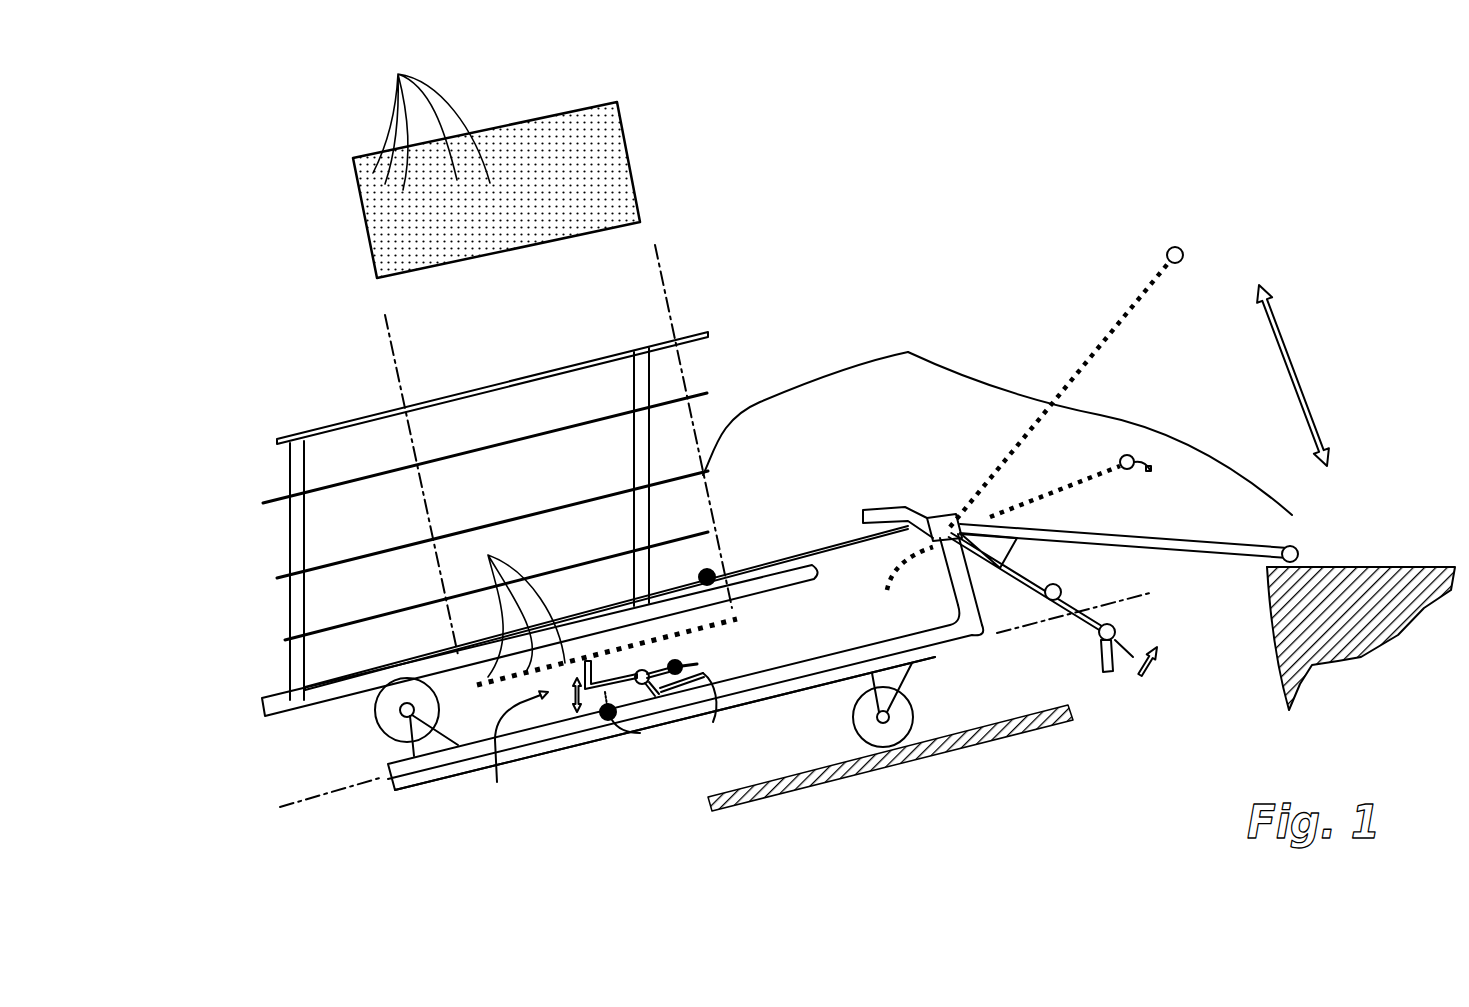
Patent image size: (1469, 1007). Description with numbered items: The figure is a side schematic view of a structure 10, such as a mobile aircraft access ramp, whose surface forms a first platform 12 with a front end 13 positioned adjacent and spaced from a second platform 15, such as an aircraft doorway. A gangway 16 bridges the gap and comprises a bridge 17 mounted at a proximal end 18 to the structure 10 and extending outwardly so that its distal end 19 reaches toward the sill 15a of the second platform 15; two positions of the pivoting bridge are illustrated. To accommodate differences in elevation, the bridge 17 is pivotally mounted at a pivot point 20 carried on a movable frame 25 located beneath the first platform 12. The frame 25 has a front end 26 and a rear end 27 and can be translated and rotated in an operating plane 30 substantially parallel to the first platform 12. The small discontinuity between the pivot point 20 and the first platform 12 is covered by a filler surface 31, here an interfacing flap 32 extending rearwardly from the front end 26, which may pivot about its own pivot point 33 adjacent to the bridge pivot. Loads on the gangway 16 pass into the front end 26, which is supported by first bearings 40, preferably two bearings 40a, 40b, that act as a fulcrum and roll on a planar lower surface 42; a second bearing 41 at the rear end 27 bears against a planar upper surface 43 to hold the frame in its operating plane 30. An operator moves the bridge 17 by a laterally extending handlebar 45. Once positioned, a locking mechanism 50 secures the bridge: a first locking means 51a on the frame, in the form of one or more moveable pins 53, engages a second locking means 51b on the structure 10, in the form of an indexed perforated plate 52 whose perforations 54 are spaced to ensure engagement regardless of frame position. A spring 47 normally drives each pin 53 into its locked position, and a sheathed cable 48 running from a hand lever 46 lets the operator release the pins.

The structure 10 is at (905, 207).
The first platform 12 is at (703, 475).
The front end 13 is at (817, 583).
The second platform 15 is at (1432, 567).
The sill 15a is at (1288, 550).
The gangway 16 is at (908, 352).
The bridge 17 is at (1128, 308).
The proximal end 18 is at (1035, 418).
The distal end 19 is at (1290, 550).
The pivot point 20 is at (953, 513).
The movable frame 25 is at (570, 745).
The front end 26 is at (970, 633).
The rear end 27 is at (403, 777).
The operating plane 30 is at (317, 800).
The filler surface 31 is at (756, 530).
The interfacing flap 32 is at (790, 553).
The pivot point 33 is at (943, 517).
The first bearings 40 is at (991, 738).
The first bearing 40a is at (991, 738).
The first bearing 40b is at (900, 718).
The second bearing 41 is at (393, 740).
The lower surface 42 is at (740, 770).
The upper surface 43 is at (333, 692).
The handlebar 45 is at (1023, 573).
The hand lever 46 is at (1130, 637).
The spring 47 is at (713, 722).
The sheathed cable 48 is at (923, 653).
The locking mechanism 50 is at (518, 752).
The first locking means 51a is at (727, 658).
The second locking means 51b is at (740, 620).
The indexed perforated plate 52 is at (573, 111).
The moveable pin 53 is at (595, 673).
The perforations 54 is at (465, 371).